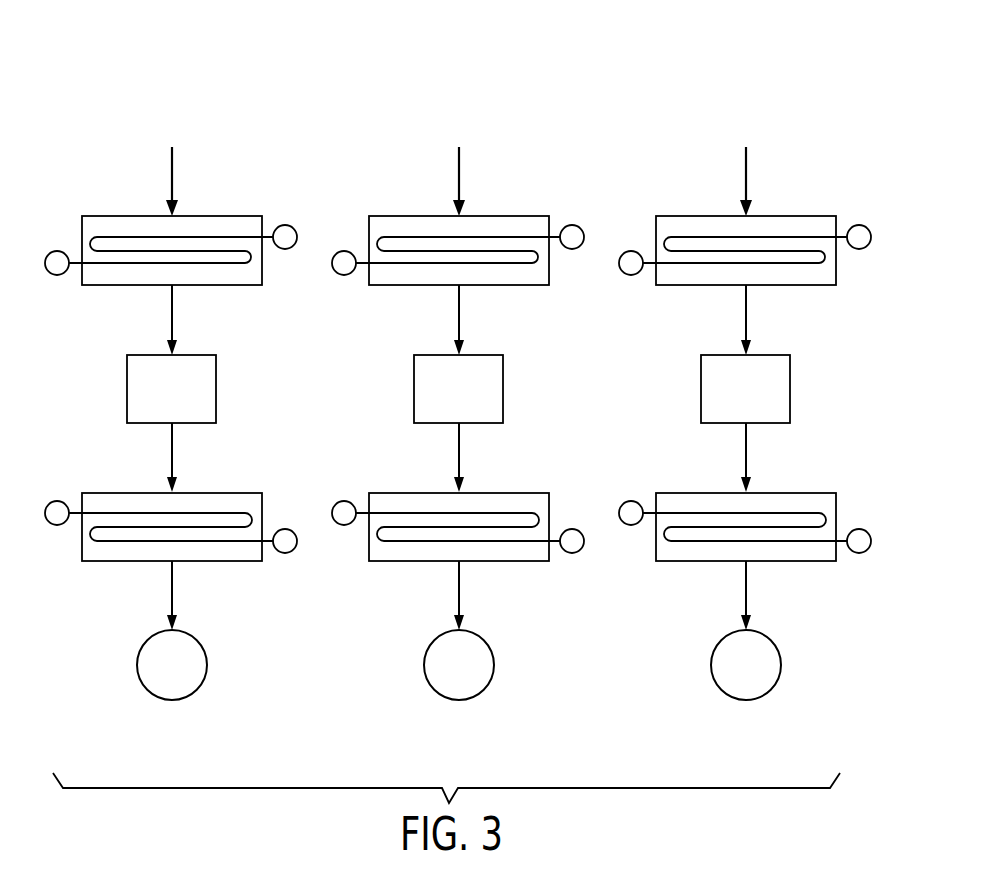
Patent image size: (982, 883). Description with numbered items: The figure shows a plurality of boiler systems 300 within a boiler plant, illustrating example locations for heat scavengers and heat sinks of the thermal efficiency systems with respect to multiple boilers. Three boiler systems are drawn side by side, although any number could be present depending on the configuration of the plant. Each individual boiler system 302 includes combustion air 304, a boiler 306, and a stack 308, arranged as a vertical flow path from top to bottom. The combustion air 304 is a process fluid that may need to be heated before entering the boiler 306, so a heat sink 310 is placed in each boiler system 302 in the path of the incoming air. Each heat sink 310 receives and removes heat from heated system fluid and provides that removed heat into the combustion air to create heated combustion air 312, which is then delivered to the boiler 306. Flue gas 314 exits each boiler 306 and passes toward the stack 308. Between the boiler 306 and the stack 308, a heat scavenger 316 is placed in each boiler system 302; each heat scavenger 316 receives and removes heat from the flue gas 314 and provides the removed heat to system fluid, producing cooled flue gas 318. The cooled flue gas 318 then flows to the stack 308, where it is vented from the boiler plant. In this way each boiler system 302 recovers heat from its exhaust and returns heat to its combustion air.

The boiler systems 300 is at (298, 40).
The boiler system 302 is at (227, 138).
The combustion air 304 is at (168, 176).
The boiler 306 is at (125, 388).
The stack 308 is at (150, 642).
The heat sink 310 is at (127, 214).
The heated combustion air 312 is at (169, 314).
The flue gas 314 is at (169, 440).
The heat scavenger 316 is at (127, 491).
The cooled flue gas 318 is at (169, 578).